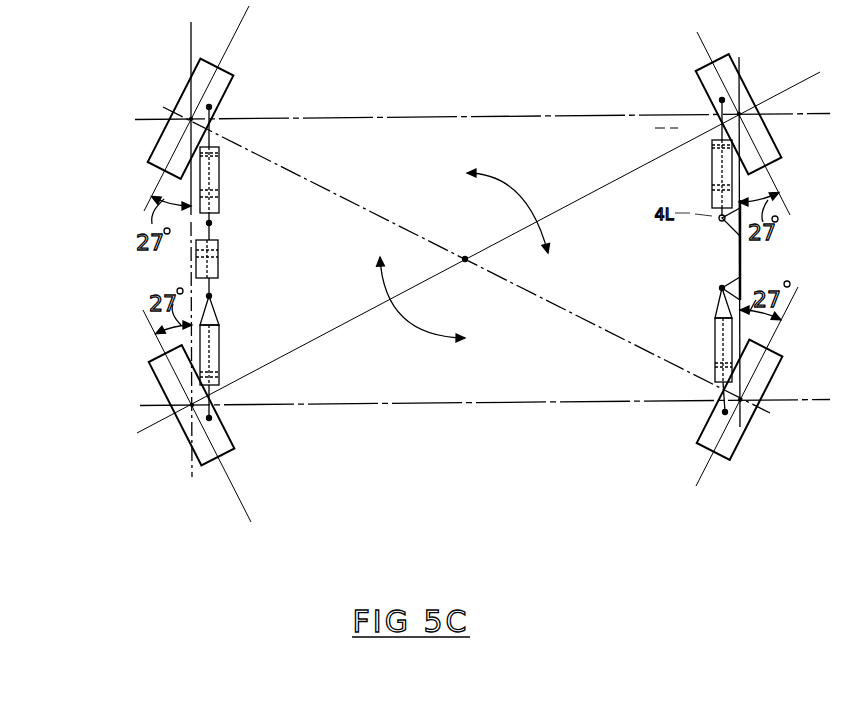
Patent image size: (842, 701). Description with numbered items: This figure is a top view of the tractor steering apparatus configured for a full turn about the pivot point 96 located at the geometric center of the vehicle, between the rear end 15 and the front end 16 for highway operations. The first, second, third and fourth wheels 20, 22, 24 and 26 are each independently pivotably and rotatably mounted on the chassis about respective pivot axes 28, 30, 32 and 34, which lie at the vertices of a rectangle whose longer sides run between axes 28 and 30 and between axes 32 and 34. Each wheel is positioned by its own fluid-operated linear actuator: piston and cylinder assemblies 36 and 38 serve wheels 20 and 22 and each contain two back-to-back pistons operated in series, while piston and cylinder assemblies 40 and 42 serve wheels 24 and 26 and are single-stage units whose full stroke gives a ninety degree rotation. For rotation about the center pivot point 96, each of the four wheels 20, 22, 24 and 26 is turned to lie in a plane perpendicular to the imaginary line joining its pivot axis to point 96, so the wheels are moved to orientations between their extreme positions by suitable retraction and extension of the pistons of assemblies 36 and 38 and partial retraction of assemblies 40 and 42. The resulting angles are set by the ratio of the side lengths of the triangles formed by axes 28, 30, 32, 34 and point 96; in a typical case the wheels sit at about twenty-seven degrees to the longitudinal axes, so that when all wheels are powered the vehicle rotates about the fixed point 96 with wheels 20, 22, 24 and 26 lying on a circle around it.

The rear end 15 is at (744, 262).
The front end for highway operations 16 is at (180, 272).
The first wheel 20 is at (700, 75).
The second wheel 22 is at (228, 80).
The third wheel 24 is at (228, 446).
The fourth wheel 26 is at (714, 448).
The pivot axis 28 is at (760, 93).
The pivot axis 30 is at (188, 110).
The pivot axis 32 is at (188, 410).
The pivot axis 34 is at (752, 410).
The piston and cylinder assembly 36 is at (712, 172).
The piston and cylinder assembly 38 is at (220, 176).
The piston and cylinder assembly 40 is at (221, 345).
The piston and cylinder assembly 42 is at (715, 340).
The pivot point 96 is at (465, 257).